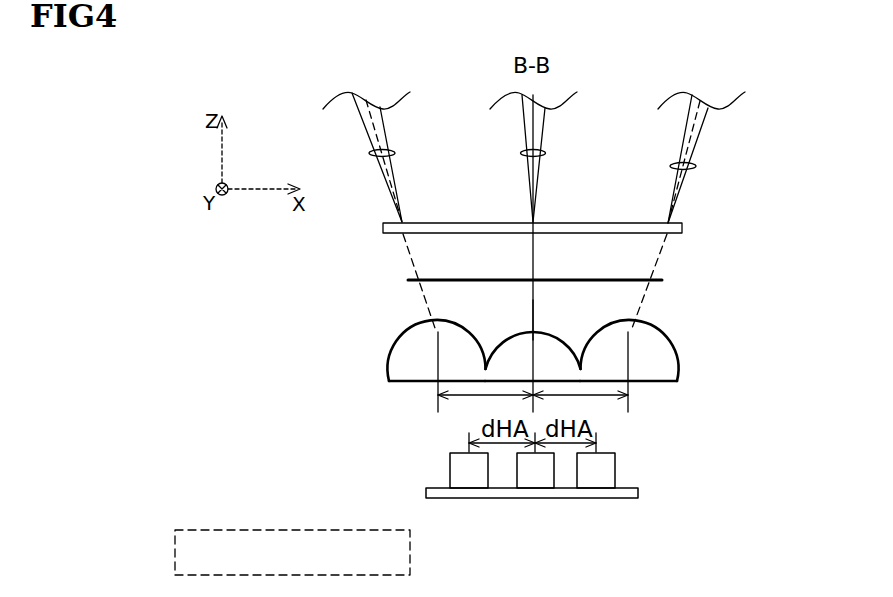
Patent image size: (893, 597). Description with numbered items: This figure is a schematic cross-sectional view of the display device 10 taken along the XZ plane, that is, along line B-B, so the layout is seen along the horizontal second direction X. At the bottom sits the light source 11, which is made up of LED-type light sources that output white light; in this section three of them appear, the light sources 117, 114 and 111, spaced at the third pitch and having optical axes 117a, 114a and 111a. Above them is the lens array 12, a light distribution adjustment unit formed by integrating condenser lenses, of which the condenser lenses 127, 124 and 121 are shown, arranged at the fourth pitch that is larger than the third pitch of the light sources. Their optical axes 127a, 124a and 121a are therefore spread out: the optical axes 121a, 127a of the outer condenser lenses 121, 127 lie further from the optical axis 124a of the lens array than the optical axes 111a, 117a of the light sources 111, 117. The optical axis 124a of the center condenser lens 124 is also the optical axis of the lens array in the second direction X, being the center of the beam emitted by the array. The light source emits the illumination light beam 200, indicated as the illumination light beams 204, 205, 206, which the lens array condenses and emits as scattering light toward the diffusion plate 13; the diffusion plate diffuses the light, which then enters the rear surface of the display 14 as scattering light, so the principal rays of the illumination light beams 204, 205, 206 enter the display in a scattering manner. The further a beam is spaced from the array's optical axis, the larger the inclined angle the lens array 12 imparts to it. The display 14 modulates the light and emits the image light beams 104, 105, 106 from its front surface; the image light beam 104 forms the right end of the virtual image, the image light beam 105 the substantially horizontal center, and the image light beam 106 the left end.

The display device 10 is at (658, 91).
The image light beam 106 is at (396, 153).
The image light beam 105 is at (546, 153).
The image light beam 104 is at (696, 166).
The display 14 is at (682, 224).
The diffusion plate 13 is at (662, 280).
The lens array 12 is at (516, 348).
The illumination light beam 206 is at (431, 330).
The illumination light beam 205 is at (531, 313).
The illumination light beam 204 is at (643, 295).
The condenser lens 124 is at (553, 345).
The condenser lens 121 is at (640, 360).
The condenser lens 127 is at (417, 355).
The optical axis 127a is at (437, 370).
The optical axis 124a is at (630, 383).
The optical axis 121a is at (537, 374).
The optical axis 117a is at (469, 435).
The optical axis 111a is at (597, 435).
The light source 117 is at (470, 473).
The light source 114 is at (537, 473).
The light source 111 is at (598, 473).
The optical axis 114a is at (518, 456).
The light source 11 is at (645, 491).
The illumination light beam 200 is at (292, 552).